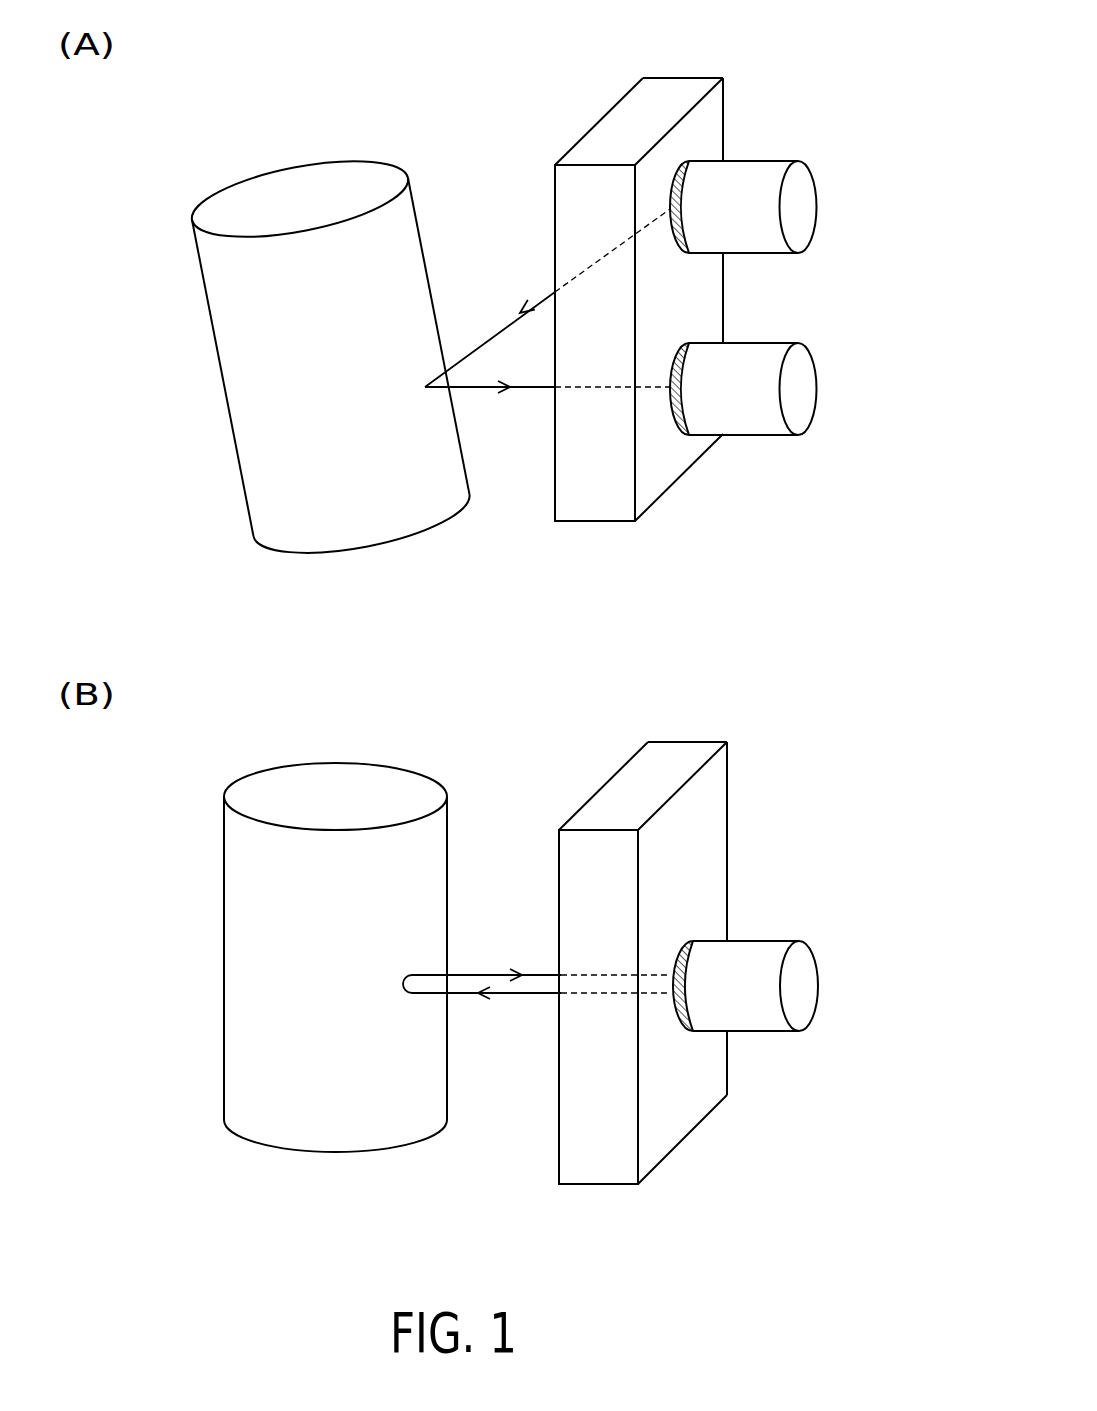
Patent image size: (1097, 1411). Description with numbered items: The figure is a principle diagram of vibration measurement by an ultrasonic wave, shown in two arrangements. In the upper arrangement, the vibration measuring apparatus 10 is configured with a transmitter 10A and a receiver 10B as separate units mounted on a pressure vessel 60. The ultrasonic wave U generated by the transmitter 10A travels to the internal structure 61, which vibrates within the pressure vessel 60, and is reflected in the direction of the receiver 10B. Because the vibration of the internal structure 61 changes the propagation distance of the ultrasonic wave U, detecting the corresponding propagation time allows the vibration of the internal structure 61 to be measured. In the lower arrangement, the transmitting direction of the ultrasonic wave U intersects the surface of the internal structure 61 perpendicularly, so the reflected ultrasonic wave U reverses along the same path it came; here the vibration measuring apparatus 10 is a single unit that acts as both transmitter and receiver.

The internal structure 61 is at (294, 164).
The pressure vessel 60 is at (668, 88).
The transmitter 10A is at (740, 163).
The receiver 10B is at (795, 308).
The vibration measuring apparatus 10 is at (745, 940).
The ultrasonic wave U is at (497, 332).